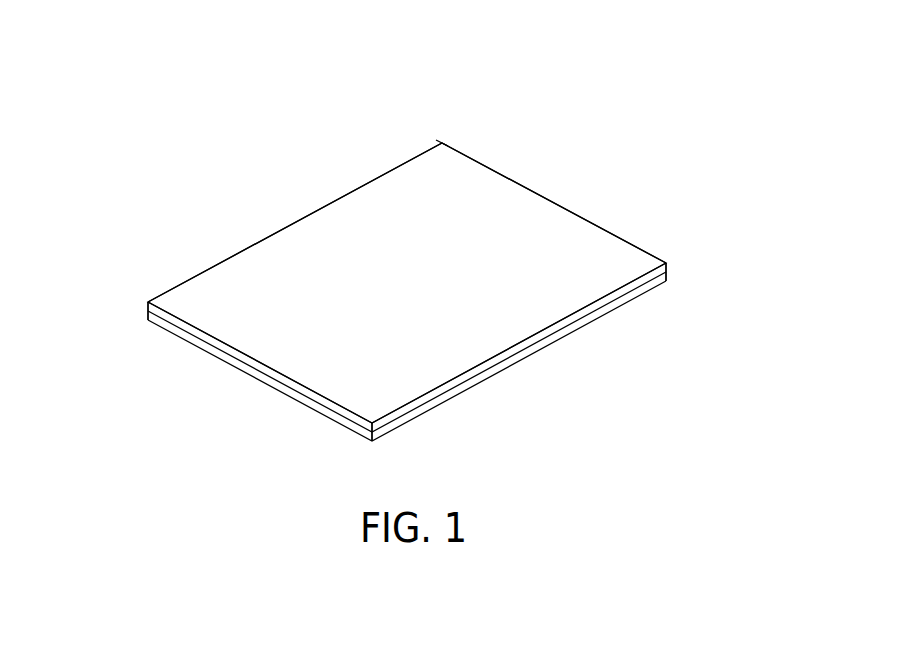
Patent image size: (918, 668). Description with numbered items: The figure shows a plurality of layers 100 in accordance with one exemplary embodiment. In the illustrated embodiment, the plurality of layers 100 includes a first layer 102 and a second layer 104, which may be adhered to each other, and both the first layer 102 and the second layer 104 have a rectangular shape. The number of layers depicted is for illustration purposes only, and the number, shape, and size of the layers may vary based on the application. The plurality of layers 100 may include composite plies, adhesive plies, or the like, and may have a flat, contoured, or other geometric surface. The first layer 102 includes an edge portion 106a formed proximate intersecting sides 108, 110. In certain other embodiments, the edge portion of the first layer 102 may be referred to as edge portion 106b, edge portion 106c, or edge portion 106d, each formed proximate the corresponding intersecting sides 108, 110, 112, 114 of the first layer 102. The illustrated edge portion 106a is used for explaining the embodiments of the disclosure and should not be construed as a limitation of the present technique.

The plurality of layers 100 is at (682, 62).
The first layer 102 is at (308, 393).
The second layer 104 is at (232, 360).
The edge portion 106a is at (385, 387).
The edge portion 106b is at (183, 295).
The edge portion 106c is at (430, 152).
The edge portion 106d is at (623, 267).
The side 108 is at (578, 331).
The side 110 is at (163, 323).
The side 112 is at (275, 230).
The side 114 is at (520, 183).